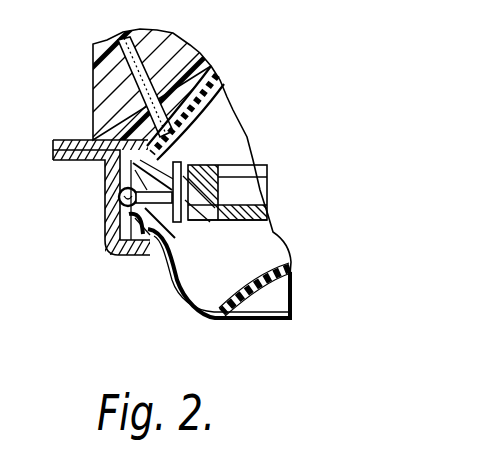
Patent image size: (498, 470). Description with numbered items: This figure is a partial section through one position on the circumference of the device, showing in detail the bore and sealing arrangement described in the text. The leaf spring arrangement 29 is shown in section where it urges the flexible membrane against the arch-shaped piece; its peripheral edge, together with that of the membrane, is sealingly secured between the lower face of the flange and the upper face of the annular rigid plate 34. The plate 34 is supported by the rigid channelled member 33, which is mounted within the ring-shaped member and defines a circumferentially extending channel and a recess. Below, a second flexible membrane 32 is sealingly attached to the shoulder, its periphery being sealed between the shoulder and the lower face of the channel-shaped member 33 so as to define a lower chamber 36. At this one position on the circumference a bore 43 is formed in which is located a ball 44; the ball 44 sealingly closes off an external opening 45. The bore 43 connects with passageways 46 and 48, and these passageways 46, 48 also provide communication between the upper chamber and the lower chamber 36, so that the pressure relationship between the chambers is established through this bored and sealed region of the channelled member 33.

The leaf spring arrangement 29 is at (217, 100).
The second flexible membrane 32 is at (210, 317).
The rigid channelled member 33 is at (273, 233).
The annular rigid plate 34 is at (210, 165).
The lower chamber 36 is at (250, 280).
The bore 43 is at (190, 198).
The ball 44 is at (112, 193).
The external opening 45 is at (110, 198).
The passageway 46 is at (185, 158).
The passageway 48 is at (195, 232).